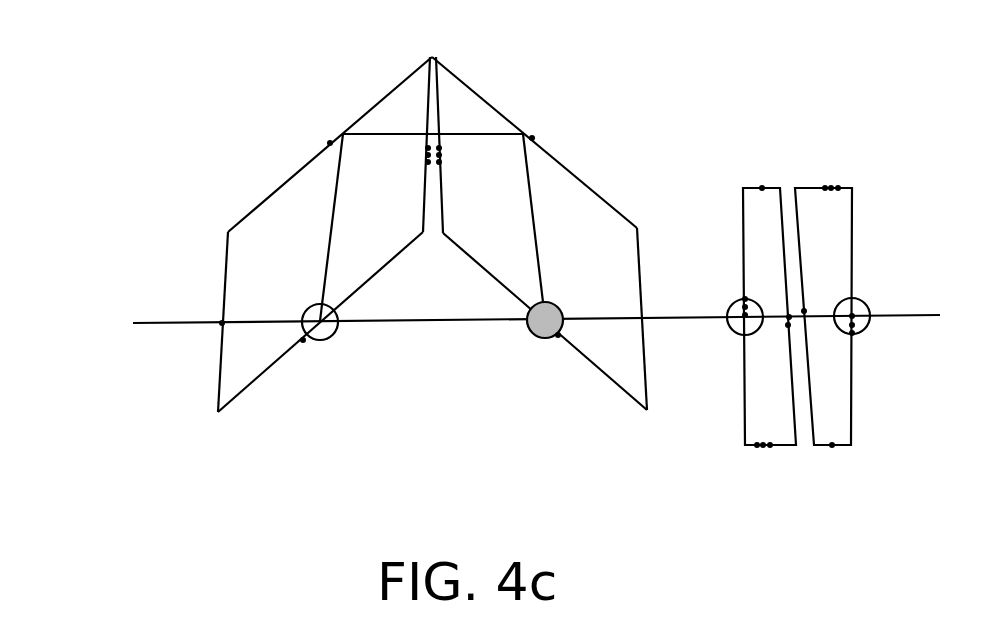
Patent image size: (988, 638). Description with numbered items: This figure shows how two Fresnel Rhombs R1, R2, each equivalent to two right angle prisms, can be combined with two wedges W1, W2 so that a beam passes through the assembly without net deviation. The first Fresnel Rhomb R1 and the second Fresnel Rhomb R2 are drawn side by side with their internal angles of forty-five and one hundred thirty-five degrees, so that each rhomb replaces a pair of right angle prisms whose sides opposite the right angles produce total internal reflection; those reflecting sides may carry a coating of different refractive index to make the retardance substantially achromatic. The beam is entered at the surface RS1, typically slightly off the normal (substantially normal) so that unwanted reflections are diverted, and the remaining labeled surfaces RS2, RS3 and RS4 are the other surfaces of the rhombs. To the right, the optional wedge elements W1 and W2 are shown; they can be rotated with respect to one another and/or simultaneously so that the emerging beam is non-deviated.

The entry surface RS1 is at (207, 364).
The second reflecting surface RS2 is at (255, 178).
The third reflecting surface RS3 is at (413, 107).
The fourth reflecting surface RS4 is at (295, 363).
The first Fresnel Rhomb R1 is at (278, 241).
The second Fresnel Rhomb R2 is at (560, 236).
The first wedge element W1 is at (748, 464).
The second wedge element W2 is at (841, 463).